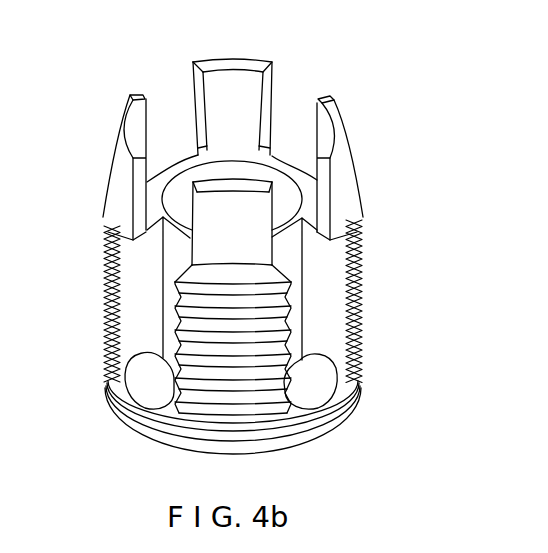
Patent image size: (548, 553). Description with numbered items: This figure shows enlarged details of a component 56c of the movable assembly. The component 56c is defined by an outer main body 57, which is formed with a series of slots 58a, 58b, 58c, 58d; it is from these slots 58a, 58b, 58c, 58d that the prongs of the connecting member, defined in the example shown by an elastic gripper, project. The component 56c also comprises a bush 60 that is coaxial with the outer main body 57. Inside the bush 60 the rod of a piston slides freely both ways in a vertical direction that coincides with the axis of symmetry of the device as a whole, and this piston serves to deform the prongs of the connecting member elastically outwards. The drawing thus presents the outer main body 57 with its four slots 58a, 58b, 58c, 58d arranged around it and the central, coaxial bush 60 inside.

The component 56c is at (380, 170).
The outer main body 57 is at (266, 420).
The slot 58a is at (307, 293).
The slot 58b is at (283, 148).
The slot 58c is at (178, 150).
The slot 58d is at (152, 270).
The bush 60 is at (176, 327).